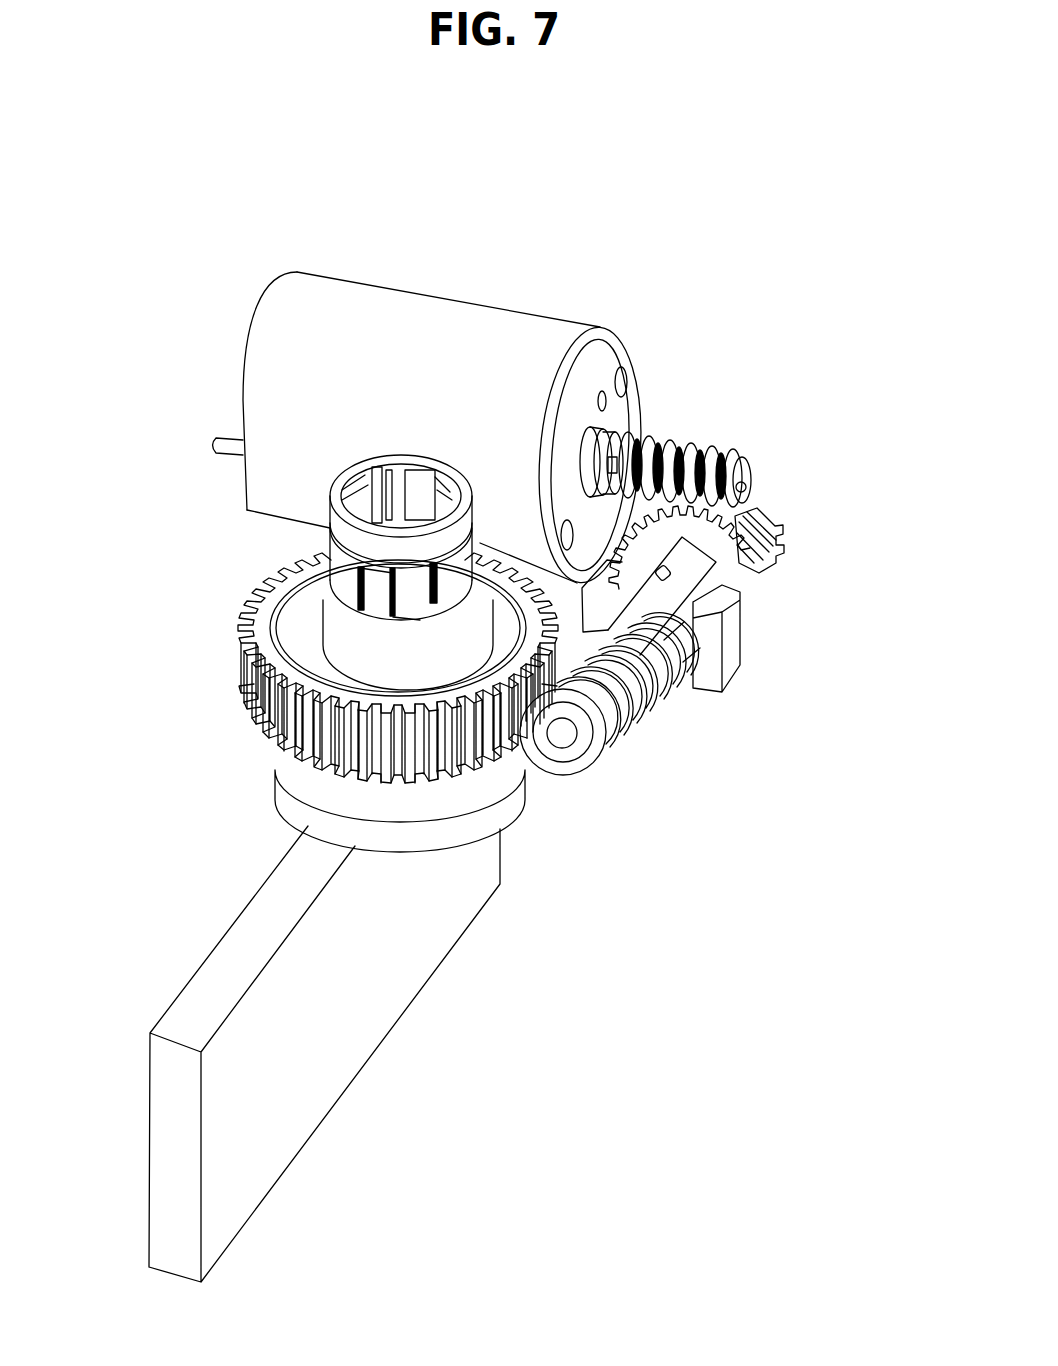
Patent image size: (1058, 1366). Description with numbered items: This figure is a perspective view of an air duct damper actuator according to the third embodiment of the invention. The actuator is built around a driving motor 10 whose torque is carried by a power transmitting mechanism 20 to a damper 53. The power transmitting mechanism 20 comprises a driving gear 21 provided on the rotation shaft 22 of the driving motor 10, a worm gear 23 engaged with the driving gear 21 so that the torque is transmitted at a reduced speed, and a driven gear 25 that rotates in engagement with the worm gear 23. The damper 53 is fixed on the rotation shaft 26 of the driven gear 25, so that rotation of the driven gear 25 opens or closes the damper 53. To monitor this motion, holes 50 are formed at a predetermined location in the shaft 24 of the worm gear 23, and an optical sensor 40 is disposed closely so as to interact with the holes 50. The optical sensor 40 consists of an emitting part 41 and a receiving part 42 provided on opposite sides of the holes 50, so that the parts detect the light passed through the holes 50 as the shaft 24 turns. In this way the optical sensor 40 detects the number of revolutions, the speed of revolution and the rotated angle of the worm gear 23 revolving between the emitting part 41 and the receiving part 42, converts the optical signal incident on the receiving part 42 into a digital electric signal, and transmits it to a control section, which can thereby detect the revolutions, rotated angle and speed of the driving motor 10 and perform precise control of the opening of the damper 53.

The driving motor 10 is at (408, 308).
The power transmitting mechanism 20 is at (663, 782).
The driving gear 21 is at (691, 437).
The rotation shaft 22 is at (613, 413).
The worm gear 23 is at (618, 746).
The shaft 24 is at (665, 652).
The driven gear 25 is at (243, 690).
The rotation shaft 26 is at (334, 536).
The optical sensor 40 is at (759, 659).
The emitting part 41 is at (723, 687).
The receiving part 42 is at (743, 633).
The holes 50 is at (758, 531).
The damper 53 is at (344, 1041).